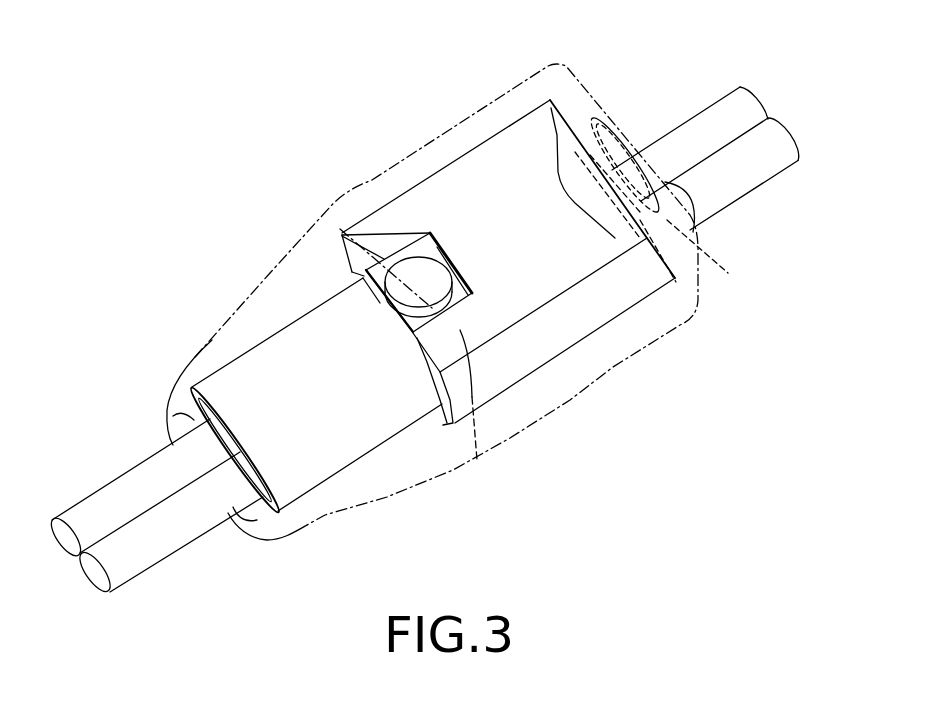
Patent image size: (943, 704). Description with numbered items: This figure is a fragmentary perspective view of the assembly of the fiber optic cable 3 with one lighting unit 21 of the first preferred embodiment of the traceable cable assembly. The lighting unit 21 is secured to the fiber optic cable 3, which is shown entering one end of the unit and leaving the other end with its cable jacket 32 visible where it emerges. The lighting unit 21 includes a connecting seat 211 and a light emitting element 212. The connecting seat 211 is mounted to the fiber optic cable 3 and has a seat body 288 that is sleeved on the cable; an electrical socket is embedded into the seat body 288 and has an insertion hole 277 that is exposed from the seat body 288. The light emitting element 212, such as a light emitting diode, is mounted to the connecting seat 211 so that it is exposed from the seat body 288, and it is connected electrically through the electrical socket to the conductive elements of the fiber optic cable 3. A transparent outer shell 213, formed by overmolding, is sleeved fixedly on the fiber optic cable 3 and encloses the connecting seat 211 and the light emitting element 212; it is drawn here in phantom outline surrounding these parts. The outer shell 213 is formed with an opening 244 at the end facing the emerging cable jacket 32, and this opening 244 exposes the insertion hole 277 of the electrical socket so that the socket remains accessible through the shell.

The lighting unit 21 is at (413, 117).
The connecting seat 211 is at (606, 289).
The light emitting element 212 is at (418, 283).
The transparent outer shell 213 is at (530, 424).
The opening 244 is at (598, 130).
The insertion hole 277 is at (711, 264).
The seat body 288 is at (527, 302).
The fiber optic cable 3 is at (102, 481).
The cable jacket 32 is at (755, 168).